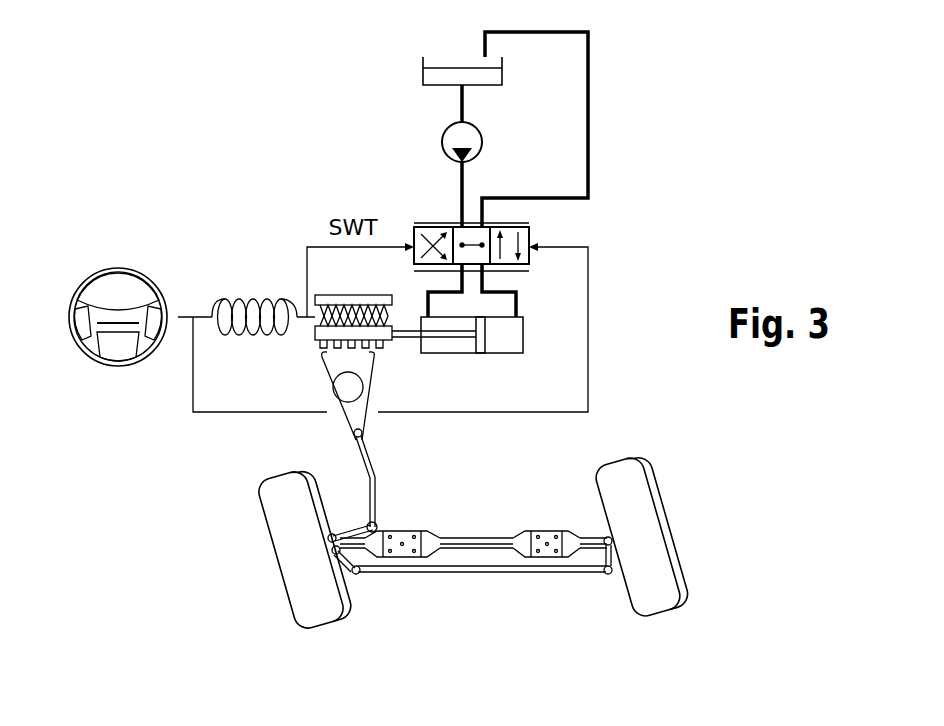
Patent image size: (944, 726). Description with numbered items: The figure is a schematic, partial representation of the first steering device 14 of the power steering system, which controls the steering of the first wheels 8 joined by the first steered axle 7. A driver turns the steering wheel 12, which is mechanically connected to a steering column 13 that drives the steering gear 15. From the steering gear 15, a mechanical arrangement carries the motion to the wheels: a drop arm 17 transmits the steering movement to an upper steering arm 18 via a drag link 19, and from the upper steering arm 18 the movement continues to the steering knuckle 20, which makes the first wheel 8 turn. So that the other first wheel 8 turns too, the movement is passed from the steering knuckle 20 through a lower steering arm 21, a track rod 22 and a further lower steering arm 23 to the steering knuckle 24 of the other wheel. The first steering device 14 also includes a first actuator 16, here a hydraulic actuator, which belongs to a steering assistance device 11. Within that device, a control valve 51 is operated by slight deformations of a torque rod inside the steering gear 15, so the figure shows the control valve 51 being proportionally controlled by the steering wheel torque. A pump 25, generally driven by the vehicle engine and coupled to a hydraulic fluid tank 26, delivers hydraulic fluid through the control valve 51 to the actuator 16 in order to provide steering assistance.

The first steered axle 7 is at (483, 537).
The first wheels 8 is at (315, 602).
The steering assistance device 11 is at (618, 254).
The steering wheel 12 is at (96, 276).
The steering column 13 is at (190, 316).
The first steering device 14 is at (666, 179).
The steering gear 15 is at (300, 357).
The first actuator 16 is at (548, 338).
The drop arm 17 is at (362, 417).
The upper steering arm 18 is at (357, 528).
The drag link 19 is at (375, 487).
The steering knuckle 20 is at (328, 537).
The lower steering arm 21 is at (344, 569).
The track rod 22 is at (478, 575).
The further lower steering arm 23 is at (615, 566).
The steering knuckle 24 is at (604, 535).
The pump 25 is at (443, 131).
The hydraulic fluid tank 26 is at (422, 72).
The control valve 51 is at (531, 234).